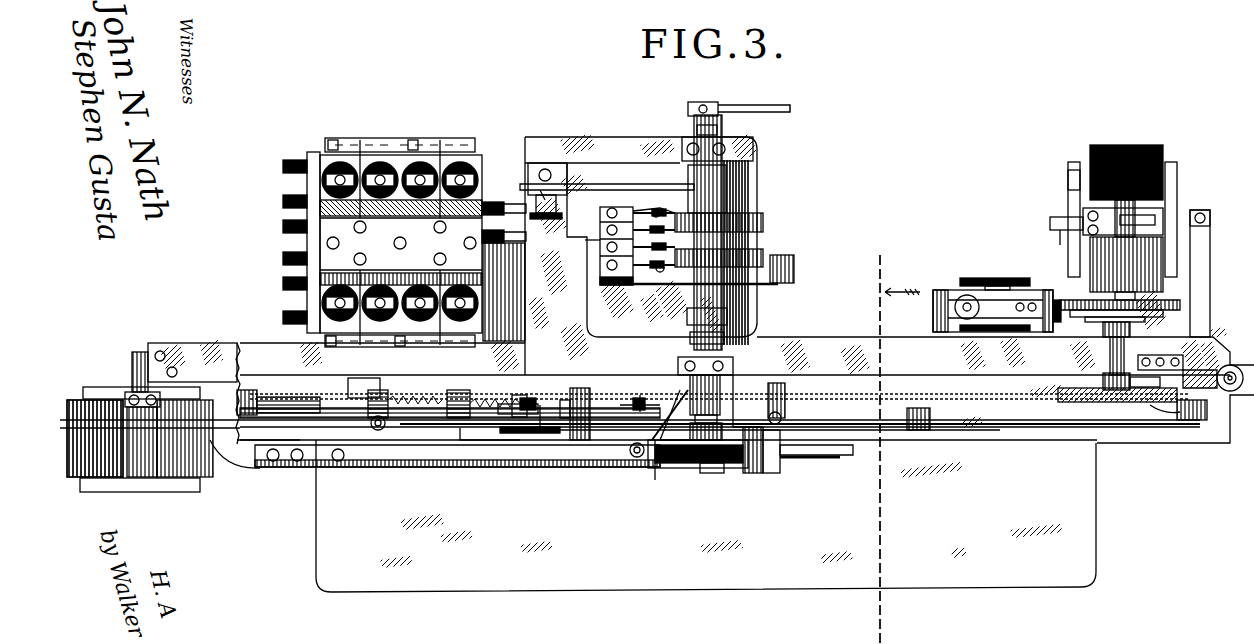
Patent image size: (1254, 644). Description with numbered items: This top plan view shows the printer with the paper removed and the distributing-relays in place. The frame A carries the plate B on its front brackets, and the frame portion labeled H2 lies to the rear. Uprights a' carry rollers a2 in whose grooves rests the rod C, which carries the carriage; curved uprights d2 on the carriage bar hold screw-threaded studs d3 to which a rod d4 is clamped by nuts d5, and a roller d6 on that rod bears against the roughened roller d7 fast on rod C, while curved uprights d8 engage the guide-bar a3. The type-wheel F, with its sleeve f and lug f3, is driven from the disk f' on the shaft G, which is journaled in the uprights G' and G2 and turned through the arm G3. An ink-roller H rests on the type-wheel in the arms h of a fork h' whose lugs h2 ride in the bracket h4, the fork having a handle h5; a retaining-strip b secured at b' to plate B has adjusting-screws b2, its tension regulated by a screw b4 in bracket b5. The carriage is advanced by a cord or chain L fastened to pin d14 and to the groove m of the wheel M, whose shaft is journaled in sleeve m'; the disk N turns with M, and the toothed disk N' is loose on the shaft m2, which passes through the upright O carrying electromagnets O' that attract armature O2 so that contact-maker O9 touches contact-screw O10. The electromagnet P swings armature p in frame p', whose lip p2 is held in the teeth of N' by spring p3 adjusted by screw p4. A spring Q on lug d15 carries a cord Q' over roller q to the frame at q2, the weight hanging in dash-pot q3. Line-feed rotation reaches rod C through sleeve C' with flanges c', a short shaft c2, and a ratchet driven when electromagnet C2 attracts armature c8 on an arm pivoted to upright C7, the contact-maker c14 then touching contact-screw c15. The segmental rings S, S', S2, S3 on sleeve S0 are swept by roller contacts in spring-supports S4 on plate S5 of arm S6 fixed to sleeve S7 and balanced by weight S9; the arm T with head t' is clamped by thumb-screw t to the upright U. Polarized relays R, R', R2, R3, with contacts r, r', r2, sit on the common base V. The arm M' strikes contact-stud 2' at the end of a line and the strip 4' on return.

The frame A is at (1112, 444).
The plate B is at (1012, 585).
The upper frame H2 is at (868, 345).
The common base V is at (307, 262).
The polarized relay R is at (440, 192).
The polarized relay R' is at (364, 192).
The polarized relay R2 is at (307, 320).
The polarized relay R3 is at (472, 326).
The relay contact r is at (411, 135).
The relay contact r' is at (328, 135).
The relay contact r2 is at (330, 342).
The lug f3 is at (400, 340).
The shaft G is at (689, 226).
The upright G' is at (739, 377).
The upright G2 is at (725, 152).
The arm G3 is at (738, 106).
The segmental ring S is at (709, 256).
The segmental ring S' is at (721, 275).
The sleeve S0 is at (722, 205).
The segmental ring S2 is at (768, 231).
The segmental ring S3 is at (767, 215).
The spring-supports S4 is at (650, 212).
The insulating-plate S5 is at (610, 285).
The arm S6 is at (660, 275).
The sleeve S7 is at (740, 288).
The counterbalance-weight S9 is at (793, 270).
The arm T is at (607, 184).
The thumb-screw t is at (553, 207).
The head t' is at (561, 188).
The upright U is at (541, 170).
The spring contact-maker c14 is at (158, 343).
The insulated contact-screw c15 is at (132, 370).
The armature c8 is at (98, 390).
The short shaft c2 is at (93, 427).
The electromagnet C2 is at (103, 480).
The upright C7 is at (142, 480).
The flanges c' is at (150, 448).
The elongated sleeve C' is at (236, 470).
The dash-pot q3 is at (240, 460).
The cord attachment q2 is at (248, 386).
The roller q is at (285, 397).
The cord Q' is at (351, 388).
The spring Q is at (515, 398).
The spring retaining-strip b is at (720, 454).
The securing point b' is at (285, 482).
The adjusting-screws b2 is at (340, 462).
The screw b4 is at (638, 458).
The bracket b5 is at (655, 482).
The curved uprights d2 is at (784, 367).
The screw-threaded studs d3 is at (376, 431).
The rod d4 is at (618, 418).
The nuts d5 is at (810, 386).
The roller d6 is at (580, 440).
The roughened roller d7 is at (575, 388).
The curved uprights d8 is at (462, 428).
The pin d14 is at (633, 403).
The lug or pin d15 is at (528, 408).
The uprights a' is at (732, 463).
The rollers a2 is at (541, 440).
The guide-bar a3 is at (1035, 430).
The sleeve f is at (670, 410).
The disk f' is at (675, 470).
The type-wheel F is at (664, 450).
The ink-roller H is at (688, 467).
The arms h is at (712, 494).
The fork h' is at (749, 474).
The lugs h2 is at (768, 473).
The supporting-bracket h4 is at (790, 460).
The rod or handle h5 is at (825, 460).
The cord or chain L is at (882, 400).
The electromagnet P is at (965, 332).
The swinging armature p is at (1000, 348).
The frame p' is at (994, 270).
The lip p2 is at (1056, 300).
The spring p3 is at (997, 275).
The adjusting-screw p4 is at (960, 300).
The shaft m2 is at (1120, 301).
The disk N is at (1105, 348).
The toothed disk N' is at (1215, 273).
The upright O is at (1143, 209).
The electromagnets O' is at (1150, 208).
The armature O2 is at (1068, 185).
The spring contact-maker O9 is at (1050, 222).
The contact-screw O10 is at (1062, 232).
The contact-stud 2' is at (1161, 352).
The contact-strip 4' is at (1213, 353).
The arm M' is at (720, 442).
The wheel M is at (1110, 444).
The annular groove m is at (1192, 438).
The sleeve m' is at (1091, 383).
The rod C is at (780, 465).